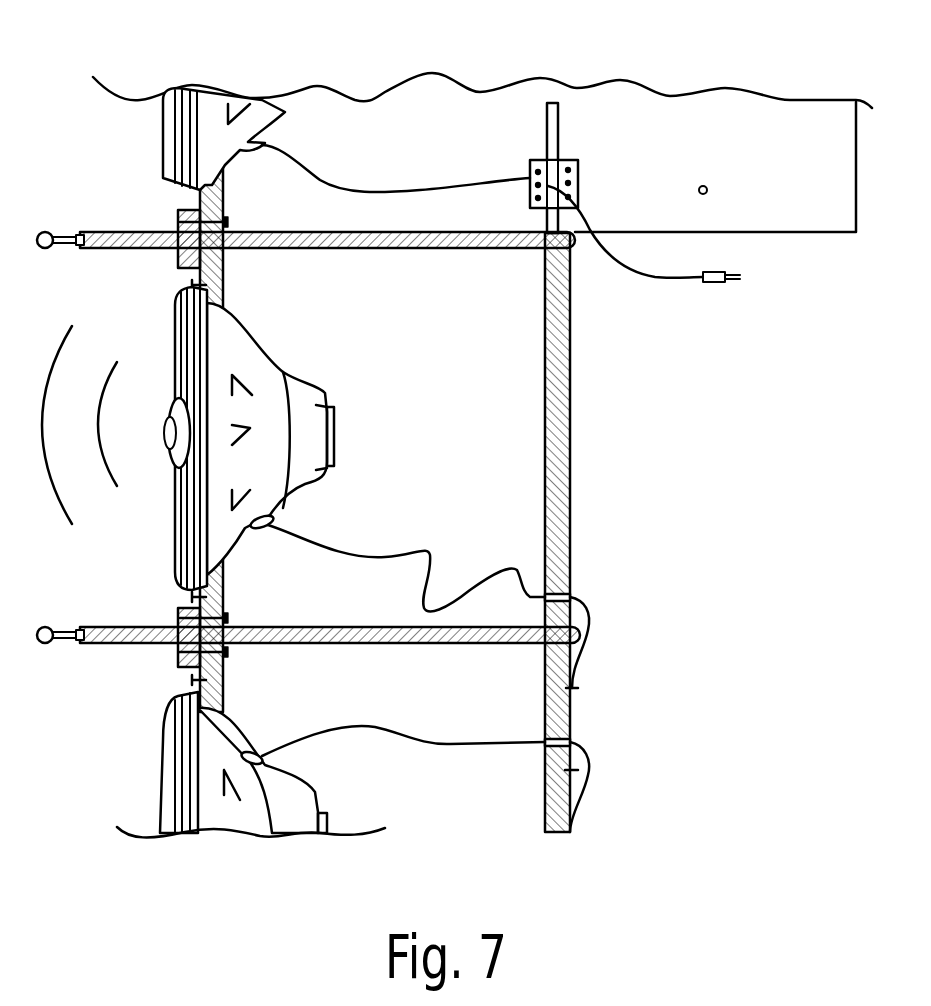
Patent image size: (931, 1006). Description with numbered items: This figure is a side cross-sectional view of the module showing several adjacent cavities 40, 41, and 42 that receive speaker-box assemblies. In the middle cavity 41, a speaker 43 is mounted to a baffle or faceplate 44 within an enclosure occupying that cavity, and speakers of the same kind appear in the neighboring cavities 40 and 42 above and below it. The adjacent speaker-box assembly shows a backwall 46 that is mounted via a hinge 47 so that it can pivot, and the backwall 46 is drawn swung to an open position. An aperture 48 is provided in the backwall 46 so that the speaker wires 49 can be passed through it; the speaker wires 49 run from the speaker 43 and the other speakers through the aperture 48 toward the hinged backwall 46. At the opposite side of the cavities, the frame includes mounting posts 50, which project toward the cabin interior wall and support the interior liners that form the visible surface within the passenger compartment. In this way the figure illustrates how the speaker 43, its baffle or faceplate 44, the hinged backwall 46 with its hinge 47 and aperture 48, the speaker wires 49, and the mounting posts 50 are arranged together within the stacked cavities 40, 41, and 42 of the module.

The cavity 40 is at (430, 145).
The cavity 41 is at (517, 428).
The cavity 42 is at (455, 793).
The speaker 43 is at (303, 383).
The baffle or faceplate 44 is at (223, 266).
The backwall 46 is at (805, 134).
The hinge 47 is at (578, 172).
The aperture 48 is at (700, 185).
The speaker wires 49 is at (684, 278).
The mounting posts 50 is at (47, 231).